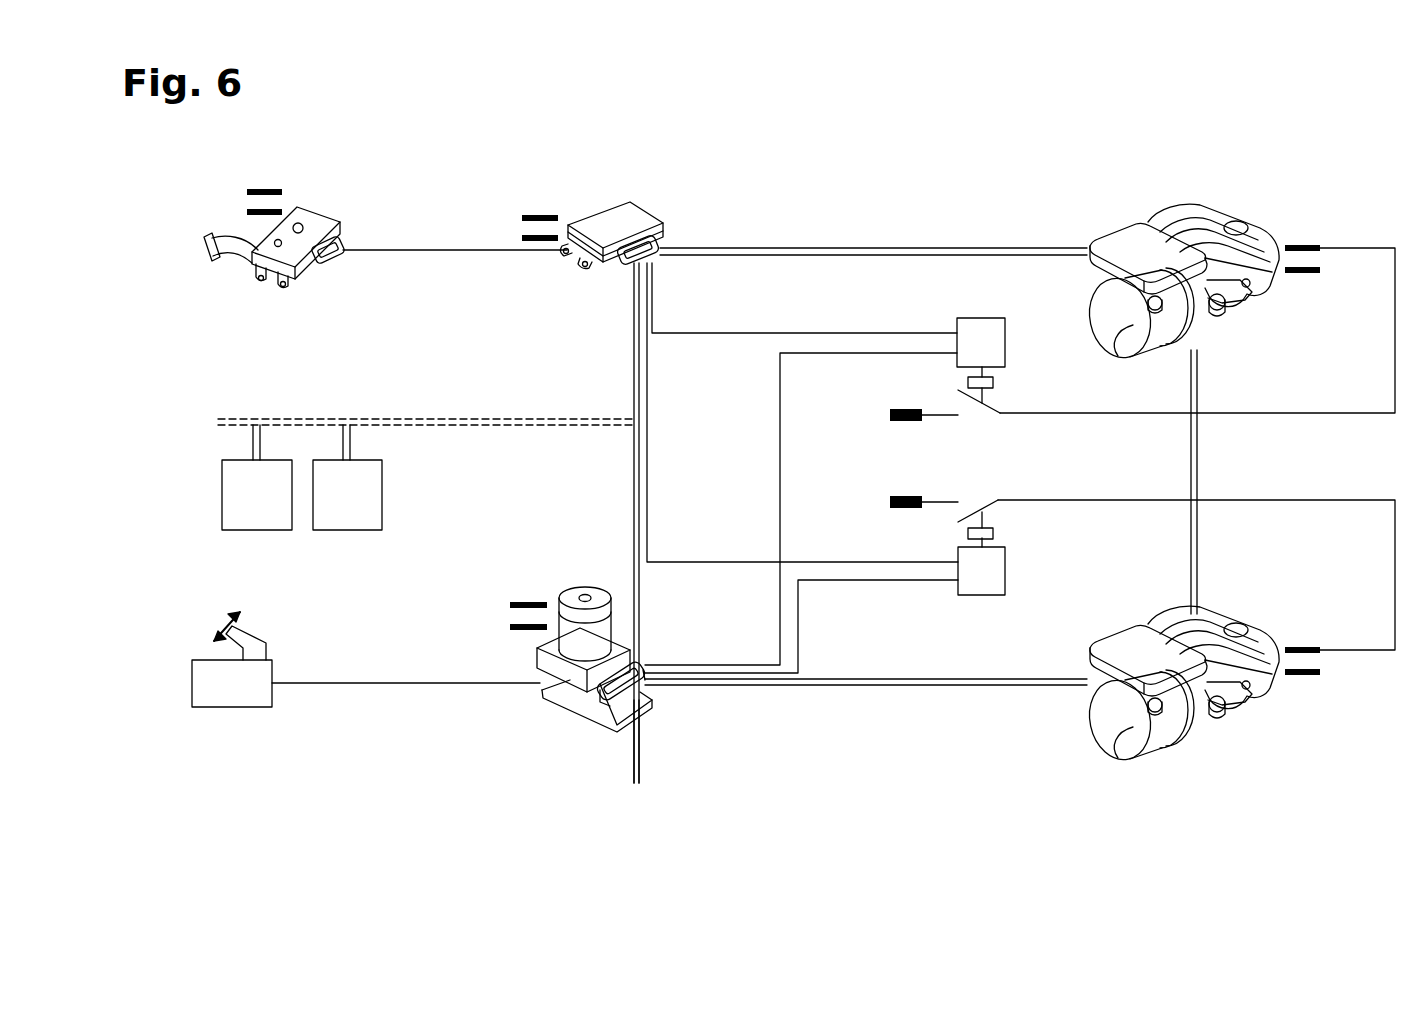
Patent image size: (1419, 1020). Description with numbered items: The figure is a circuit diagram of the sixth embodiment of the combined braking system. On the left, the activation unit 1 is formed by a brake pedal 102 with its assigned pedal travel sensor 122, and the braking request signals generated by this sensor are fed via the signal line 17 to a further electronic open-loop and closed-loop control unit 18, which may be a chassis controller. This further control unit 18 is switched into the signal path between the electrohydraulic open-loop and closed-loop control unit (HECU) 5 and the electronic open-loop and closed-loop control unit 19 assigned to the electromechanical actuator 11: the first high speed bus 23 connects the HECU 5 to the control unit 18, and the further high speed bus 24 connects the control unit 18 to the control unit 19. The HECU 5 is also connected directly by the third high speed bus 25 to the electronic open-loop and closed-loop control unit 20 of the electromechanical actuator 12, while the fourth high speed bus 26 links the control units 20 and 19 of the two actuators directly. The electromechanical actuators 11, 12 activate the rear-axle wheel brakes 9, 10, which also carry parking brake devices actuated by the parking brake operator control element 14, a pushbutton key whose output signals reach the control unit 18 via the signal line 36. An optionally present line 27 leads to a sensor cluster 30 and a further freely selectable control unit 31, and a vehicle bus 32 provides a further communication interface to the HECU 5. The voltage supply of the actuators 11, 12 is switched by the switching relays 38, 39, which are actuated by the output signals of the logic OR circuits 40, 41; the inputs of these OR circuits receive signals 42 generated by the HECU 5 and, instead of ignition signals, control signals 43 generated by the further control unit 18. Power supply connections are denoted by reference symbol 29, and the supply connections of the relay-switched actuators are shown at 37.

The activation unit 1 is at (243, 278).
The brake pedal 102 is at (205, 246).
The pedal travel sensor 122 is at (343, 230).
The power supply connections 29 is at (268, 188).
The signal line 17 is at (448, 248).
The further electronic open-loop and closed-loop control unit 18 is at (653, 220).
The further high speed bus 24 is at (882, 246).
The third high speed bus 25 is at (1054, 677).
The fourth high speed bus 26 is at (1198, 467).
The signal line 36 is at (392, 681).
The first high speed bus 23 is at (633, 483).
The vehicle bus 32 is at (634, 758).
The control signals 43 is at (712, 336).
The signals 42 is at (717, 664).
The logic OR circuit 40 is at (1006, 340).
The logic OR circuit 41 is at (1006, 585).
The switching relay 38 is at (961, 389).
The switching relay 39 is at (999, 507).
The energy supply (battery) for actuators 37 is at (1316, 244).
The line 27 is at (427, 418).
The further electronic open-loop and closed-loop control unit 31 is at (222, 520).
The sensor cluster 30 is at (382, 520).
The parking brake operator control element 14 is at (264, 650).
The electrohydraulic open-loop and closed-loop control unit (HECU) 5 is at (586, 595).
The electronic open-loop and closed-loop control unit 19 is at (1110, 240).
The wheel brake 9 is at (1222, 222).
The electromechanical actuator 11 is at (1130, 328).
The electronic open-loop and closed-loop control unit 20 is at (1118, 642).
The wheel brake 10 is at (1240, 636).
The electromechanical actuator 12 is at (1130, 736).